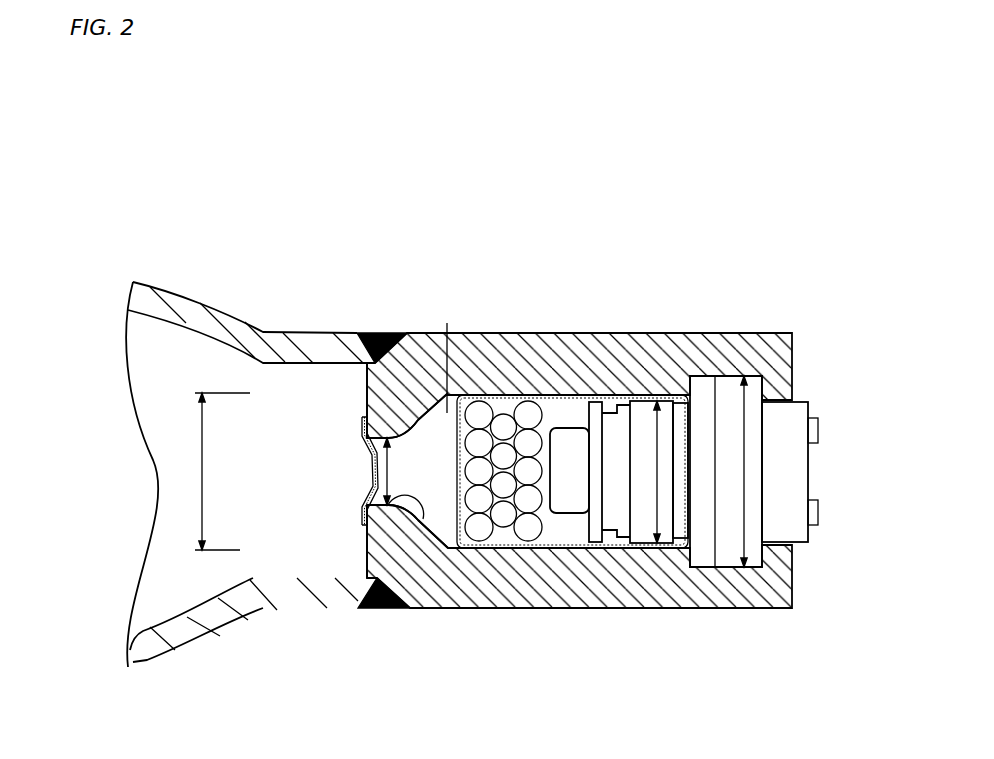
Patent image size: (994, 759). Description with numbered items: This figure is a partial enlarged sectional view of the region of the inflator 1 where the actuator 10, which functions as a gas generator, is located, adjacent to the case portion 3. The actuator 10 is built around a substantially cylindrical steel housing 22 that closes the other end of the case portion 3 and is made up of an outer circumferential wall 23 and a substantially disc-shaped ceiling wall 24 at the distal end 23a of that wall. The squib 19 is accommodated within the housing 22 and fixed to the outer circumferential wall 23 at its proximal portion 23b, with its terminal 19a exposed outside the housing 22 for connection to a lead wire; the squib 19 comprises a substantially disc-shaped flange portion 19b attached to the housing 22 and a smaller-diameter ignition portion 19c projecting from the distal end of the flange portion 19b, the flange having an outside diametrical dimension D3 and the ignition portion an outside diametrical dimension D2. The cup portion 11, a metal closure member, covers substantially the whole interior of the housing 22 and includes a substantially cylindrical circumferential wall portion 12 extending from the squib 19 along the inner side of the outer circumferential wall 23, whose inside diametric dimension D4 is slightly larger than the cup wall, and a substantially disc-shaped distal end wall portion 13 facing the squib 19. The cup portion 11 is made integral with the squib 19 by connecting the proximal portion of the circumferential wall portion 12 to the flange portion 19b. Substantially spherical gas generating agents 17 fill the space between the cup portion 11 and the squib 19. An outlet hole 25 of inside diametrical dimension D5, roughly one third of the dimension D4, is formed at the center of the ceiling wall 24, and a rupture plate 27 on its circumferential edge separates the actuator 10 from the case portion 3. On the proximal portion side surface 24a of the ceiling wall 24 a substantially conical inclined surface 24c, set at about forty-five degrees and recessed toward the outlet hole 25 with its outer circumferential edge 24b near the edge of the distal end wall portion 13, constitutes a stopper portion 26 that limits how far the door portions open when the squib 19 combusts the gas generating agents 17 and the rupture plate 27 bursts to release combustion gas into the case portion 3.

The inflator 1 is at (652, 212).
The case portion 3 is at (207, 296).
The actuator 10 is at (695, 308).
The cup portion 11 is at (446, 525).
The circumferential wall portion 12 is at (605, 545).
The distal end wall portion 13 is at (367, 454).
The gas generating agents 17 is at (533, 550).
The squib 19 is at (801, 391).
The terminal 19a is at (797, 543).
The flange portion 19b is at (729, 568).
The ignition portion 19c is at (572, 422).
The housing 22 is at (659, 620).
The outer circumferential wall 23 is at (562, 602).
The distal end 23a is at (461, 595).
The proximal portion 23b is at (777, 602).
The ceiling wall 24 is at (362, 541).
The proximal portion side surface 24a is at (408, 521).
The outer circumferential edge 24b is at (463, 563).
The inclined surface 24c is at (419, 416).
The outlet hole 25 is at (454, 442).
The stopper portion 26 is at (362, 494).
The rupture plate 27 is at (365, 488).
The outside diametrical dimension of the ignition portion D2 is at (658, 400).
The outside diametrical dimension of the flange portion D3 is at (744, 375).
The inside diametric dimension of the outer circumferential wall D4 is at (201, 477).
The inside diametrical dimension of the outlet hole D5 is at (391, 476).